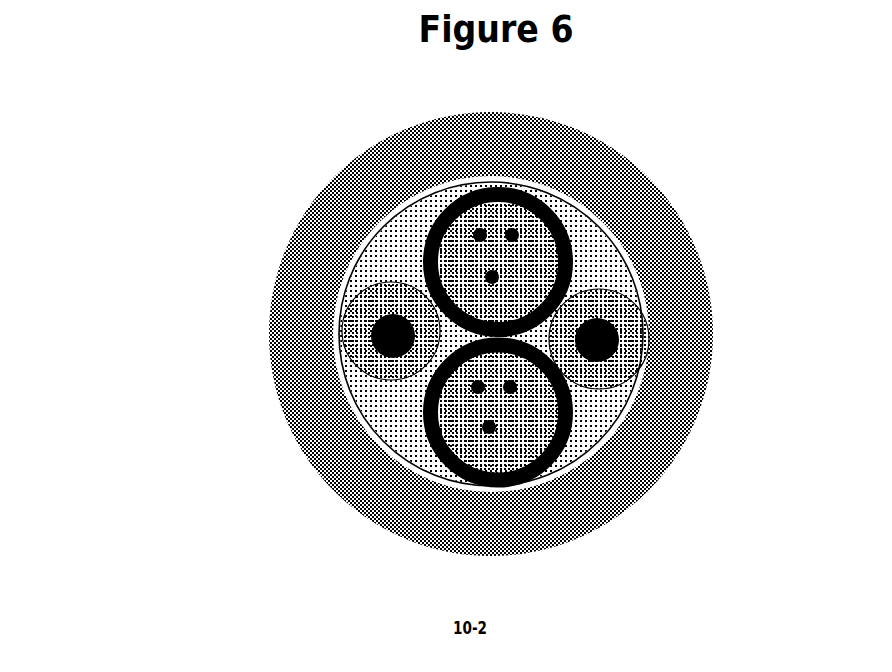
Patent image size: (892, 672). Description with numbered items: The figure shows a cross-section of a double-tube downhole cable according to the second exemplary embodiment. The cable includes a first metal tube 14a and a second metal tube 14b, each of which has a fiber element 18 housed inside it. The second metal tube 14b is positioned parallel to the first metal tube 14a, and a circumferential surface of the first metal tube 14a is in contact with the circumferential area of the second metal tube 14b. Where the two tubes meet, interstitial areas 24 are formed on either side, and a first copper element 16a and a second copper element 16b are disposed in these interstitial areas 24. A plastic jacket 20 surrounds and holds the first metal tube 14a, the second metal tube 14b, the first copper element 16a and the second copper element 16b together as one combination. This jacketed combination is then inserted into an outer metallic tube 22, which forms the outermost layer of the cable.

The first metal tube 14a is at (425, 260).
The second metal tube 14b is at (663, 538).
The first copper element 16a is at (66, 340).
The second copper element 16b is at (780, 432).
The fiber element 18 is at (478, 232).
The plastic jacket 20 is at (287, 555).
The metallic tube 22 is at (742, 152).
The interstitial areas 24 is at (537, 337).